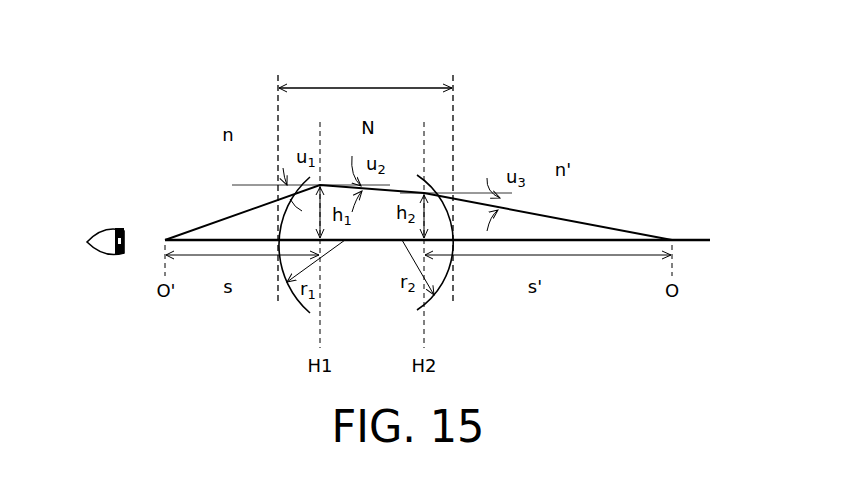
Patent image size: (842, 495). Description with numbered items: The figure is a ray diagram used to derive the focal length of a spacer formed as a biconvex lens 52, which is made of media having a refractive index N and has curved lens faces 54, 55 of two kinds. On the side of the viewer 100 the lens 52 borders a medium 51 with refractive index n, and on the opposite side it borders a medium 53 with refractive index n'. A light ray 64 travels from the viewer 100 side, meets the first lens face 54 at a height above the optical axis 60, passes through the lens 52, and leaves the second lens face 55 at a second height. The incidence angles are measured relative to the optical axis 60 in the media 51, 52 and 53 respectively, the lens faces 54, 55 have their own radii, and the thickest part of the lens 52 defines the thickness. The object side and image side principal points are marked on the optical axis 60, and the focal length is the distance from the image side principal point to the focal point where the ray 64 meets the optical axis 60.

The medium 51 is at (262, 117).
The biconvex lens 52 is at (400, 120).
The medium 53 is at (490, 100).
The lens face 54 is at (277, 203).
The lens face 55 is at (432, 166).
The optical axis 60 is at (553, 241).
The light ray 64 is at (198, 228).
The viewer 100 is at (100, 256).